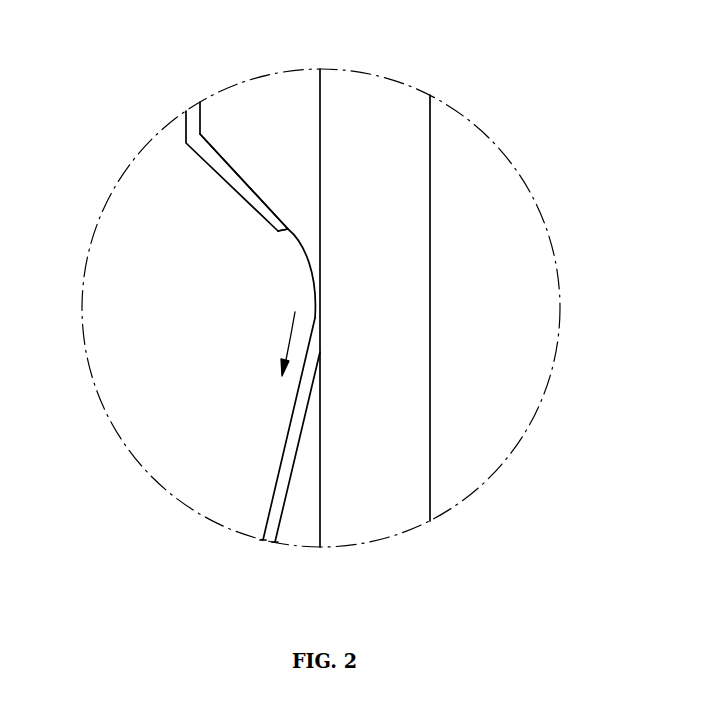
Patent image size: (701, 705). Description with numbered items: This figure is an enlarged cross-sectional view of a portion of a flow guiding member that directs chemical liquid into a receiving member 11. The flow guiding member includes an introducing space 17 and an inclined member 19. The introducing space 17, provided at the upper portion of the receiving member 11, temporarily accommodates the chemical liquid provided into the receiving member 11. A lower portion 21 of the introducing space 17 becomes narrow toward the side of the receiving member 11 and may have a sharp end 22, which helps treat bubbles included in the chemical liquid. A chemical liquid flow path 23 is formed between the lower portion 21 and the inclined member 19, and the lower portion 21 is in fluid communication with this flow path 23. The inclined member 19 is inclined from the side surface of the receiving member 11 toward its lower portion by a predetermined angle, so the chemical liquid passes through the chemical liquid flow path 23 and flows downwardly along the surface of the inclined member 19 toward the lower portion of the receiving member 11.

The receiving member 11 is at (430, 190).
The introducing space 17 is at (252, 151).
The inclined member 19 is at (285, 511).
The lower portion of the introducing space 21 is at (269, 196).
The sharp end 22 is at (270, 240).
The chemical liquid flow path 23 is at (314, 245).